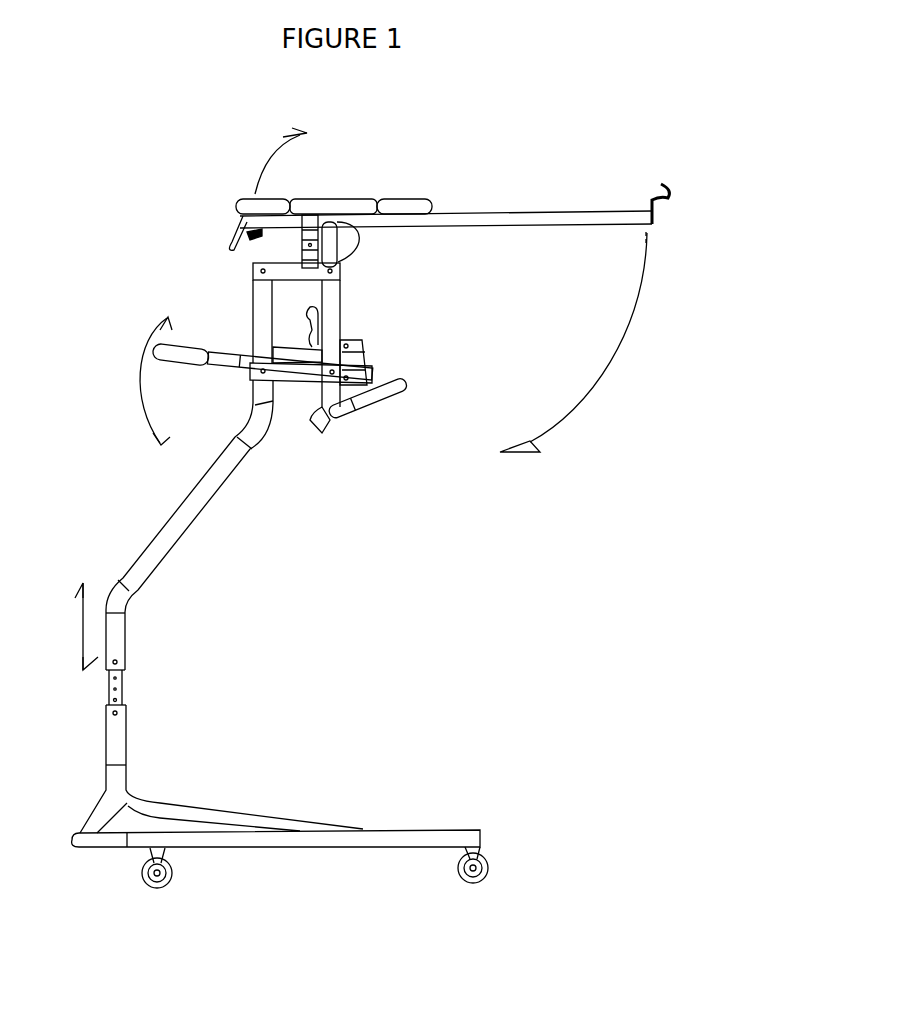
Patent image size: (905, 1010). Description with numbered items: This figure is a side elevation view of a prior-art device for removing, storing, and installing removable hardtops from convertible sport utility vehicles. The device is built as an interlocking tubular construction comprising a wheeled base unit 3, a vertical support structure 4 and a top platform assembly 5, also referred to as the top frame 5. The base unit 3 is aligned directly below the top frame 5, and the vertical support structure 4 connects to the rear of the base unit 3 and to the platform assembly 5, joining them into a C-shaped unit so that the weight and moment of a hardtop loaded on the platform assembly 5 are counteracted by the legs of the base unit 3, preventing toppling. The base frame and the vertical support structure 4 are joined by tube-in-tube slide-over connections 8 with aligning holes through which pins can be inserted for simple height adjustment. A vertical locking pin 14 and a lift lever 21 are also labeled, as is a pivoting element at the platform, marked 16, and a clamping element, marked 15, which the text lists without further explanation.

The wheeled base unit 3 is at (315, 808).
The vertical support structure 4 is at (143, 545).
The top platform assembly 5 is at (210, 232).
The slide-over connections 8 is at (98, 696).
The vertical locking pin 14 is at (455, 205).
The clamp 15 is at (385, 363).
The pivot 16 is at (365, 243).
The lift lever 21 is at (147, 353).